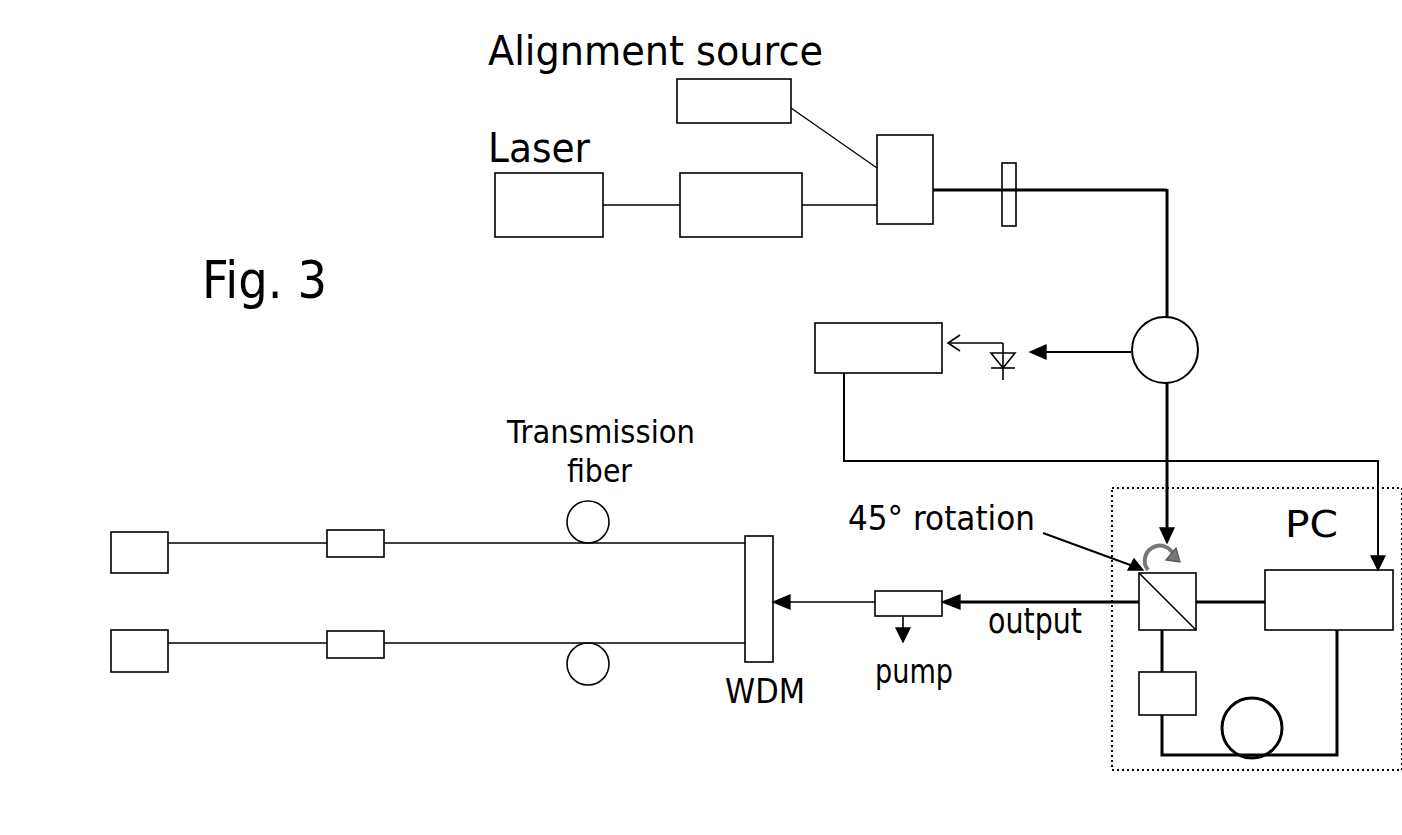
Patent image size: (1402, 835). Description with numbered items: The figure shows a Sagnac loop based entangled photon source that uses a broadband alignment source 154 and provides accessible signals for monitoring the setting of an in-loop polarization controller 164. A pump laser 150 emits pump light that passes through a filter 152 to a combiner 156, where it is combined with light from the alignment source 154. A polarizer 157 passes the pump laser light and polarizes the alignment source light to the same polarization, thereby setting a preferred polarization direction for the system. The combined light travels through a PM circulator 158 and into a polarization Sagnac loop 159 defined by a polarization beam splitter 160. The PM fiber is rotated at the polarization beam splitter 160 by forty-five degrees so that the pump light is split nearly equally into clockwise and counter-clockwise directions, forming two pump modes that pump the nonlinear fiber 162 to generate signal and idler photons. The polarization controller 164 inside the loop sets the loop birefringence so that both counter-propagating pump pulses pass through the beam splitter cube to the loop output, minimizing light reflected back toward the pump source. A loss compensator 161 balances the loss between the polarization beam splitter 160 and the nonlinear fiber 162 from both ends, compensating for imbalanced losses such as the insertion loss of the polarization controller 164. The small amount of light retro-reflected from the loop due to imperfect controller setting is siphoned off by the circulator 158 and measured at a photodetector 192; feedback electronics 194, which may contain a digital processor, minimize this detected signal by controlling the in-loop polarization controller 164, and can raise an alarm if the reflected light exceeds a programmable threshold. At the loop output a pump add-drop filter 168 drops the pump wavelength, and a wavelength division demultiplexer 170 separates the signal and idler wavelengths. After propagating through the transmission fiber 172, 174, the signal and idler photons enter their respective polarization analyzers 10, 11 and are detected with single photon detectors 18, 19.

The pump laser 150 is at (549, 230).
The filter 152 is at (741, 229).
The broadband alignment source 154 is at (734, 123).
The combiner 156 is at (906, 203).
The polarizer 157 is at (1010, 173).
The PM circulator 158 is at (1134, 330).
The photodetector 192 is at (985, 385).
The feedback electronics 194 is at (848, 345).
The polarization beam splitter 160 is at (1196, 580).
The polarization controller 164 is at (1330, 600).
The loss compensator 161 is at (1191, 672).
The nonlinear fiber 162 is at (1249, 694).
The polarization Sagnac loop 159 is at (1246, 629).
The pump add-drop filter 168 is at (908, 593).
The wavelength division demultiplexer 170 is at (758, 578).
The transmission fiber 172 is at (553, 522).
The transmission fiber 174 is at (553, 674).
The polarization analyzer 10 is at (355, 521).
The polarization analyzer 11 is at (355, 670).
The single photon detector 18 is at (139, 534).
The single photon detector 19 is at (139, 677).